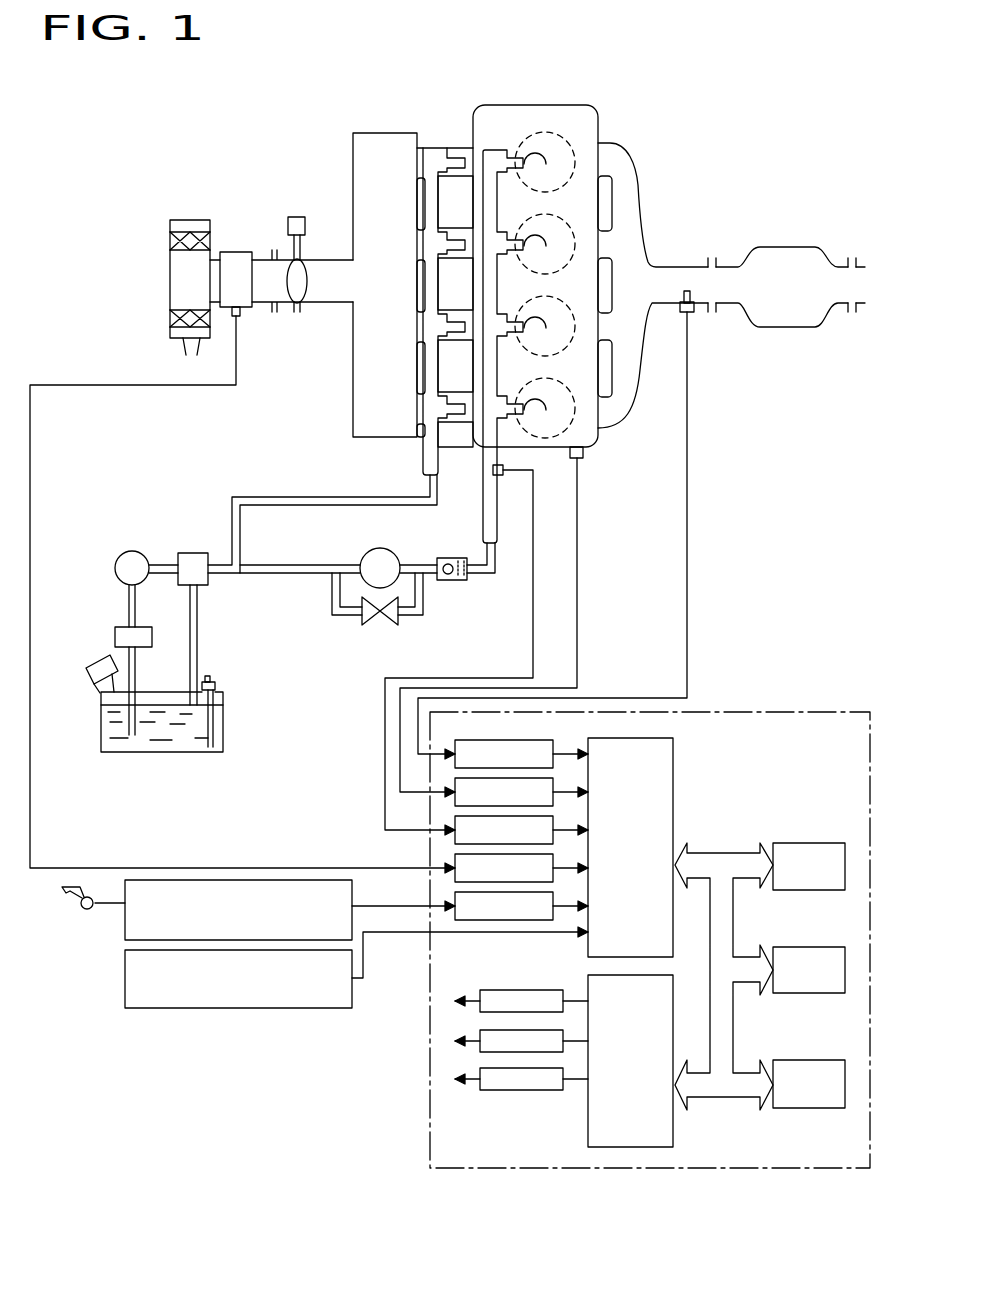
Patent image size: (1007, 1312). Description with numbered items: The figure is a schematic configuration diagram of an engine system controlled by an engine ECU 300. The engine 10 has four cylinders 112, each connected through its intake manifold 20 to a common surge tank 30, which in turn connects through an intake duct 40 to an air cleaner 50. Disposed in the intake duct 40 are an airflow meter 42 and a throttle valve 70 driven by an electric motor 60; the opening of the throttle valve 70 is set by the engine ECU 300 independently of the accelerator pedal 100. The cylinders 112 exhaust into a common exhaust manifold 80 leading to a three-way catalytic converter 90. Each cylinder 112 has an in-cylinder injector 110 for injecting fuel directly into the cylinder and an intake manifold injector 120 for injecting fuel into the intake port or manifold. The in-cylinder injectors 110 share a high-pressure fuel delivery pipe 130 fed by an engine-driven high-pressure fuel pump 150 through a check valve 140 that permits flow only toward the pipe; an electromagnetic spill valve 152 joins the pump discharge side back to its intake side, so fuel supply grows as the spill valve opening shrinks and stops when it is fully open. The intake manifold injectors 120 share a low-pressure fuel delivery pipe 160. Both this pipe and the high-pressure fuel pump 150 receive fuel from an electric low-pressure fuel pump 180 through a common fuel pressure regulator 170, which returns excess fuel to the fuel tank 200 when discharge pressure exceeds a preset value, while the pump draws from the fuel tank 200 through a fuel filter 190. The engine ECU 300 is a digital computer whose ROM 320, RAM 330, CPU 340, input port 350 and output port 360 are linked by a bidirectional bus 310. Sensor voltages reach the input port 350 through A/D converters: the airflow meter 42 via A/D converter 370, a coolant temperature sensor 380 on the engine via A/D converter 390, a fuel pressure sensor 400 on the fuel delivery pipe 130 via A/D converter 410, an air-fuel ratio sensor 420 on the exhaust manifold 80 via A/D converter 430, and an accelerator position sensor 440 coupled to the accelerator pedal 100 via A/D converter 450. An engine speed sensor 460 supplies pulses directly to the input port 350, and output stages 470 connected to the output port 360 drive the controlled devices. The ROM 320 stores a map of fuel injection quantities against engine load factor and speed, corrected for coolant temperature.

The engine 10 is at (609, 102).
The intake manifold 20 is at (433, 147).
The surge tank 30 is at (372, 132).
The intake duct 40 is at (327, 260).
The airflow meter 42 is at (237, 252).
The air cleaner 50 is at (170, 271).
The electric motor 60 is at (292, 217).
The throttle valve 70 is at (302, 291).
The exhaust manifold 80 is at (637, 182).
The three-way catalytic converter 90 is at (786, 247).
The accelerator pedal 100 is at (72, 898).
The in-cylinder injector 110 is at (545, 285).
The cylinder 112 is at (574, 146).
The intake manifold injector 120 is at (423, 161).
The fuel delivery pipe 130 is at (492, 150).
The check valve 140 is at (452, 581).
The high-pressure fuel pump 150 is at (365, 553).
The electromagnetic spill valve 152 is at (386, 622).
The fuel delivery pipe 160 is at (423, 456).
The fuel pressure regulator 170 is at (193, 553).
The low-pressure fuel pump 180 is at (136, 551).
The fuel filter 190 is at (118, 628).
The fuel tank 200 is at (166, 753).
The engine ECU 300 is at (811, 702).
The bidirectional bus 310 is at (718, 853).
The ROM 320 is at (800, 843).
The RAM 330 is at (800, 947).
The CPU 340 is at (800, 1060).
The input port 350 is at (675, 762).
The output port 360 is at (675, 1132).
The A/D converter 370 is at (440, 866).
The coolant temperature sensor 380 is at (584, 460).
The A/D converter 390 is at (440, 789).
The fuel pressure sensor 400 is at (508, 478).
The A/D converter 410 is at (440, 827).
The air-fuel ratio sensor 420 is at (690, 316).
The A/D converter 430 is at (440, 752).
The accelerator position sensor 440 is at (125, 918).
The A/D converter 450 is at (450, 905).
The engine speed sensor 460 is at (125, 985).
The drive circuit 470 is at (478, 1006).